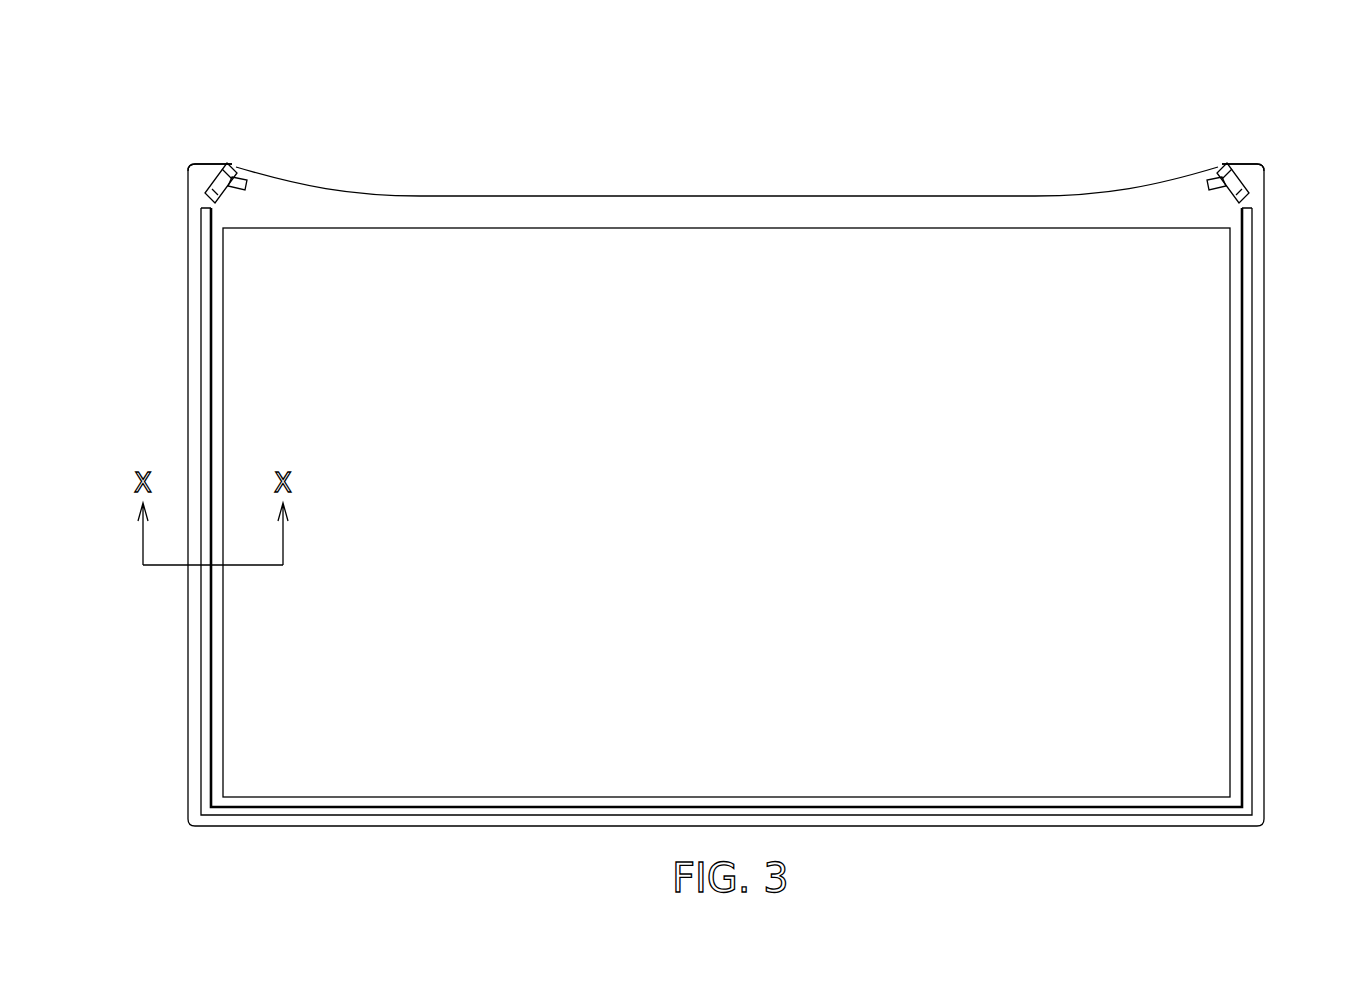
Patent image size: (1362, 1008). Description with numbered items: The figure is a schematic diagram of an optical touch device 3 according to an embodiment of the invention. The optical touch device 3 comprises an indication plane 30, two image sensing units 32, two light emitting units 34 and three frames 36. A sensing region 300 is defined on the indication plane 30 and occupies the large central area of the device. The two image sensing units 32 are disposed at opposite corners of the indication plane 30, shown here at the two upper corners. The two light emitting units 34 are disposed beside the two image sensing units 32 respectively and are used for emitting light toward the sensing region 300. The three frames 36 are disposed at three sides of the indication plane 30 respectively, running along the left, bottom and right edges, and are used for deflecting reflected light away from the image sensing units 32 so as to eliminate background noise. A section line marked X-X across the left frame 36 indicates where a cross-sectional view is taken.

The optical touch device 3 is at (1150, 106).
The indication plane 30 is at (556, 213).
The sensing region 300 is at (750, 325).
The image sensing unit 32 is at (210, 190).
The light emitting unit 34 is at (236, 168).
The frame 36 is at (207, 374).